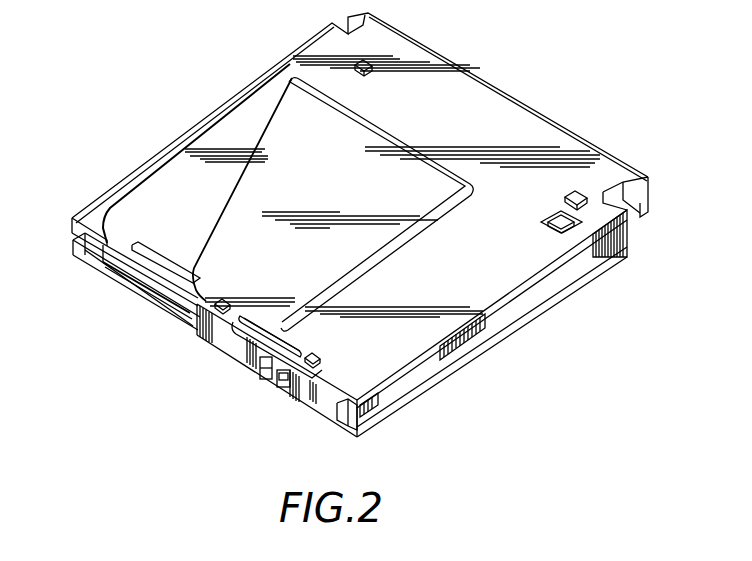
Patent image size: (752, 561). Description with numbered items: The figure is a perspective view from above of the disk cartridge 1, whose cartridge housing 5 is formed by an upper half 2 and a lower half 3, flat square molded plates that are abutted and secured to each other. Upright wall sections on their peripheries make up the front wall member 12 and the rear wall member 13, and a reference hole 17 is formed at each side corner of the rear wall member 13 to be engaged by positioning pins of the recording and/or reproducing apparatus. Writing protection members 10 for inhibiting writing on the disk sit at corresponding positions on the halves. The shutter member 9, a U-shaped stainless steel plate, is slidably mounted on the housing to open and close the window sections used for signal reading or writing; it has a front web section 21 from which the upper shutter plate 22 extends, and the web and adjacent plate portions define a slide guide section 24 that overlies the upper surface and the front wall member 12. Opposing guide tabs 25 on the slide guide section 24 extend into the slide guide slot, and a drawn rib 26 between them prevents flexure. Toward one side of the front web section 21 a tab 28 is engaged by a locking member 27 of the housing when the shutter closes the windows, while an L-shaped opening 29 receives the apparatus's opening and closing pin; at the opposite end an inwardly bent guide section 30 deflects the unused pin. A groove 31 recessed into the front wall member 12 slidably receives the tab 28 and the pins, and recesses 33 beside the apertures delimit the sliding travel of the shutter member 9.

The disk cartridge 1 is at (293, 63).
The upper half 2 is at (517, 297).
The lower half 3 is at (504, 328).
The cartridge housing 5 is at (566, 318).
The shutter member 9 is at (362, 262).
The writing protection member 10 is at (585, 247).
The front wall member 12 is at (128, 270).
The rear wall member 13 is at (477, 72).
The reference hole 17 is at (360, 66).
The front web section 21 is at (228, 347).
The upper shutter plate 22 is at (303, 205).
The slide guide section 24 is at (322, 367).
The guide tab 25 is at (222, 309).
The rib 26 is at (287, 345).
The locking member 27 is at (267, 380).
The tab 28 is at (283, 388).
The opening 29 is at (257, 370).
The guide section 30 is at (190, 314).
The groove 31 is at (322, 410).
The recess 33 is at (198, 147).